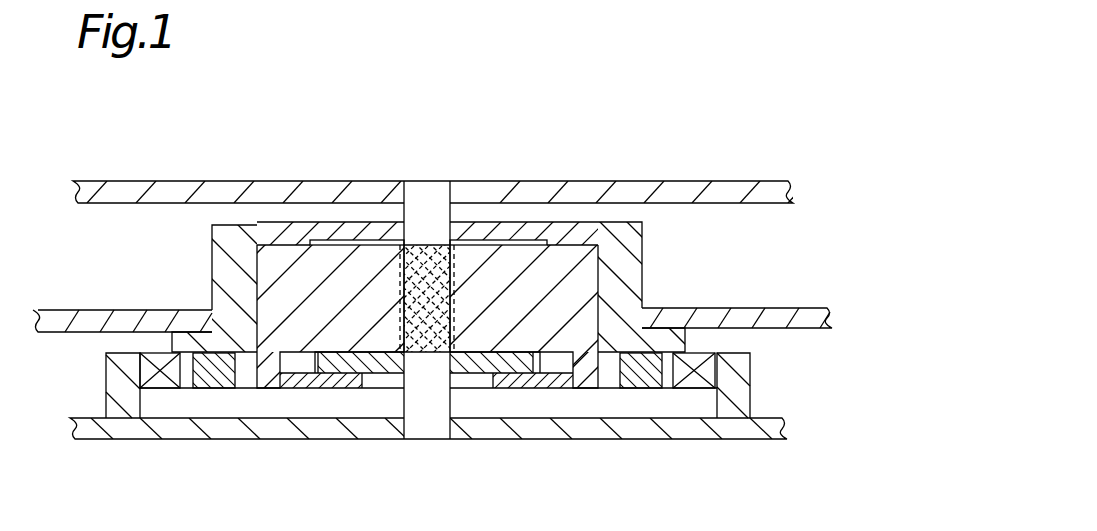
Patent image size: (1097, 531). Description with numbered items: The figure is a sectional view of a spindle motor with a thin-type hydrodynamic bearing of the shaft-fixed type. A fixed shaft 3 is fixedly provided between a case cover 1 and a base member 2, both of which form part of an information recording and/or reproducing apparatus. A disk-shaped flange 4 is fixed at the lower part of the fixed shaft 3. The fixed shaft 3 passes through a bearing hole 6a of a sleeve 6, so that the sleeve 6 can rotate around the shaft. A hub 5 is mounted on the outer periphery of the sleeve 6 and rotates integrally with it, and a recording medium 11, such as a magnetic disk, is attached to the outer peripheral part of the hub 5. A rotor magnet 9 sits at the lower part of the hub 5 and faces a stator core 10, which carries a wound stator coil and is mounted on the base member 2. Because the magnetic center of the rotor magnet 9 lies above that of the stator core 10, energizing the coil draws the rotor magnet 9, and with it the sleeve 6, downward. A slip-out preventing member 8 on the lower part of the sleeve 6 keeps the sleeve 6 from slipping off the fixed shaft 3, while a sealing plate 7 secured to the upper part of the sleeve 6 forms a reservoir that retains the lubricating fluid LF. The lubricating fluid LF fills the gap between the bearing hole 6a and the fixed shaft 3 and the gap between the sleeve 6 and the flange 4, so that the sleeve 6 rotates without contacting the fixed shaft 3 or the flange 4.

The case cover 1 is at (360, 193).
The base member 2 is at (372, 430).
The fixed shaft 3 is at (432, 422).
The flange 4 is at (470, 366).
The hub 5 is at (223, 263).
The sleeve 6 is at (582, 265).
The bearing hole 6a is at (512, 240).
The sealing plate 7 is at (560, 233).
The slip-out preventing member 8 is at (312, 380).
The rotor magnet 9 is at (213, 373).
The stator core 10 is at (167, 388).
The recording medium 11 is at (92, 320).
The lubricating fluid LF is at (388, 307).